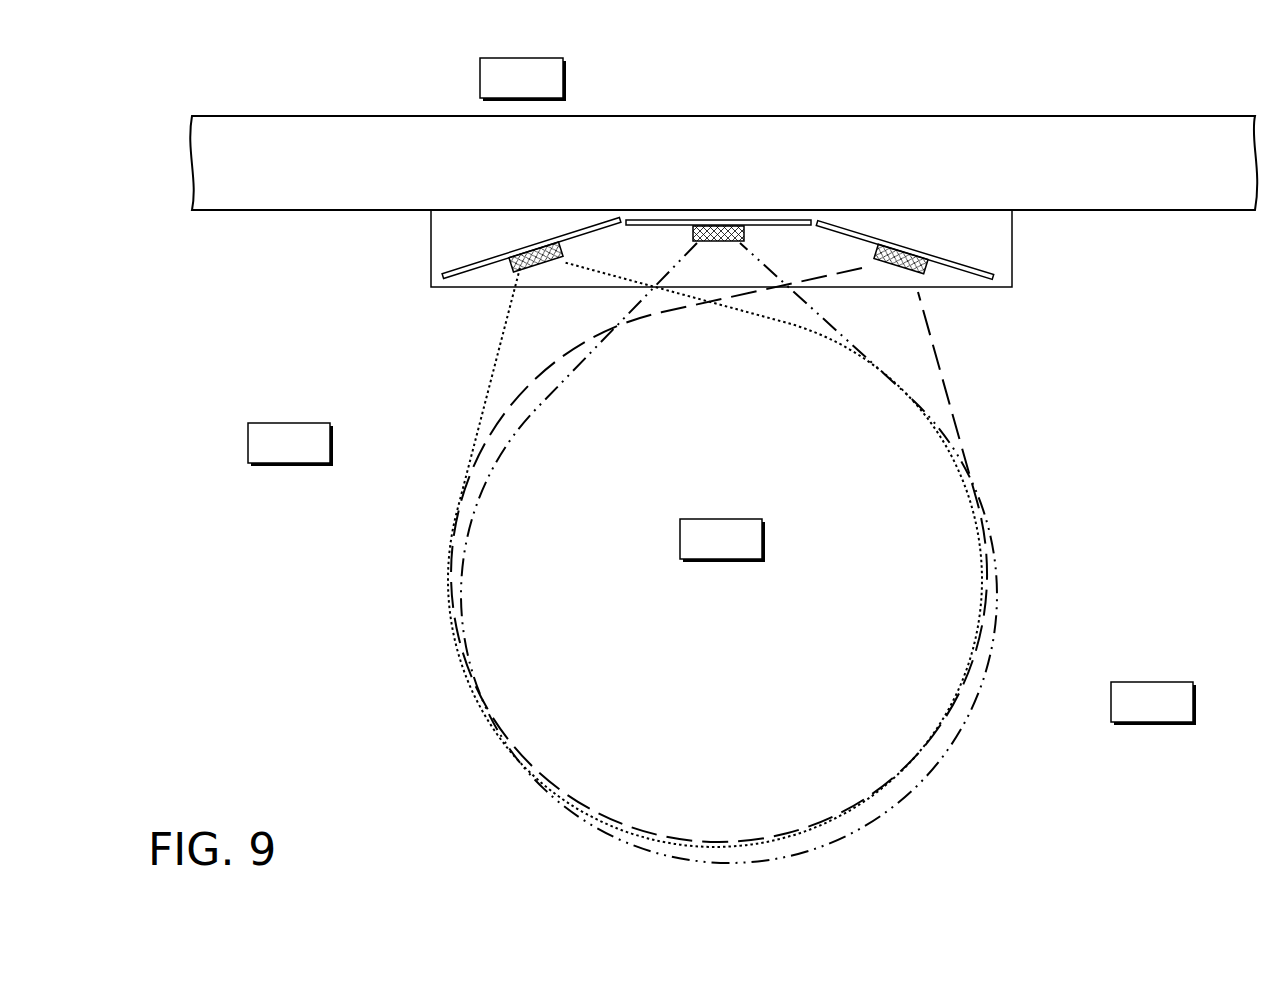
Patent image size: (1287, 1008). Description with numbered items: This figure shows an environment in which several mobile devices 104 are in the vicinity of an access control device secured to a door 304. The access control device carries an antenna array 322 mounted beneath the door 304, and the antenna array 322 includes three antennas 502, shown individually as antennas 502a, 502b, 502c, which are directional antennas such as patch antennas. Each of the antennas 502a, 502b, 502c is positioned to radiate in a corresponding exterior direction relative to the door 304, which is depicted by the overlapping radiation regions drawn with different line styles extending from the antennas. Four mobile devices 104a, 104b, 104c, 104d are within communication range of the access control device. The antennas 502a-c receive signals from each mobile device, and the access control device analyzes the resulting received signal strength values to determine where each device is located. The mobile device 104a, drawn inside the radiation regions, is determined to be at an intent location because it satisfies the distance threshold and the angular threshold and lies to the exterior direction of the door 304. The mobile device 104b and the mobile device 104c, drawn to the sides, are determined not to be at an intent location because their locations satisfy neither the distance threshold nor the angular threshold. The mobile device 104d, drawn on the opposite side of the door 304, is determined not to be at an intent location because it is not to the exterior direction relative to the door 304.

The door 304 is at (1070, 116).
The antenna array 322 is at (658, 192).
The antennas 502 is at (724, 511).
The antenna 502a is at (697, 250).
The antenna 502b is at (538, 253).
The antenna 502c is at (903, 255).
The mobile device 104 is at (757, 377).
The mobile device 104a is at (722, 518).
The mobile device 104b is at (292, 421).
The mobile device 104c is at (1153, 680).
The mobile device 104d is at (523, 55).